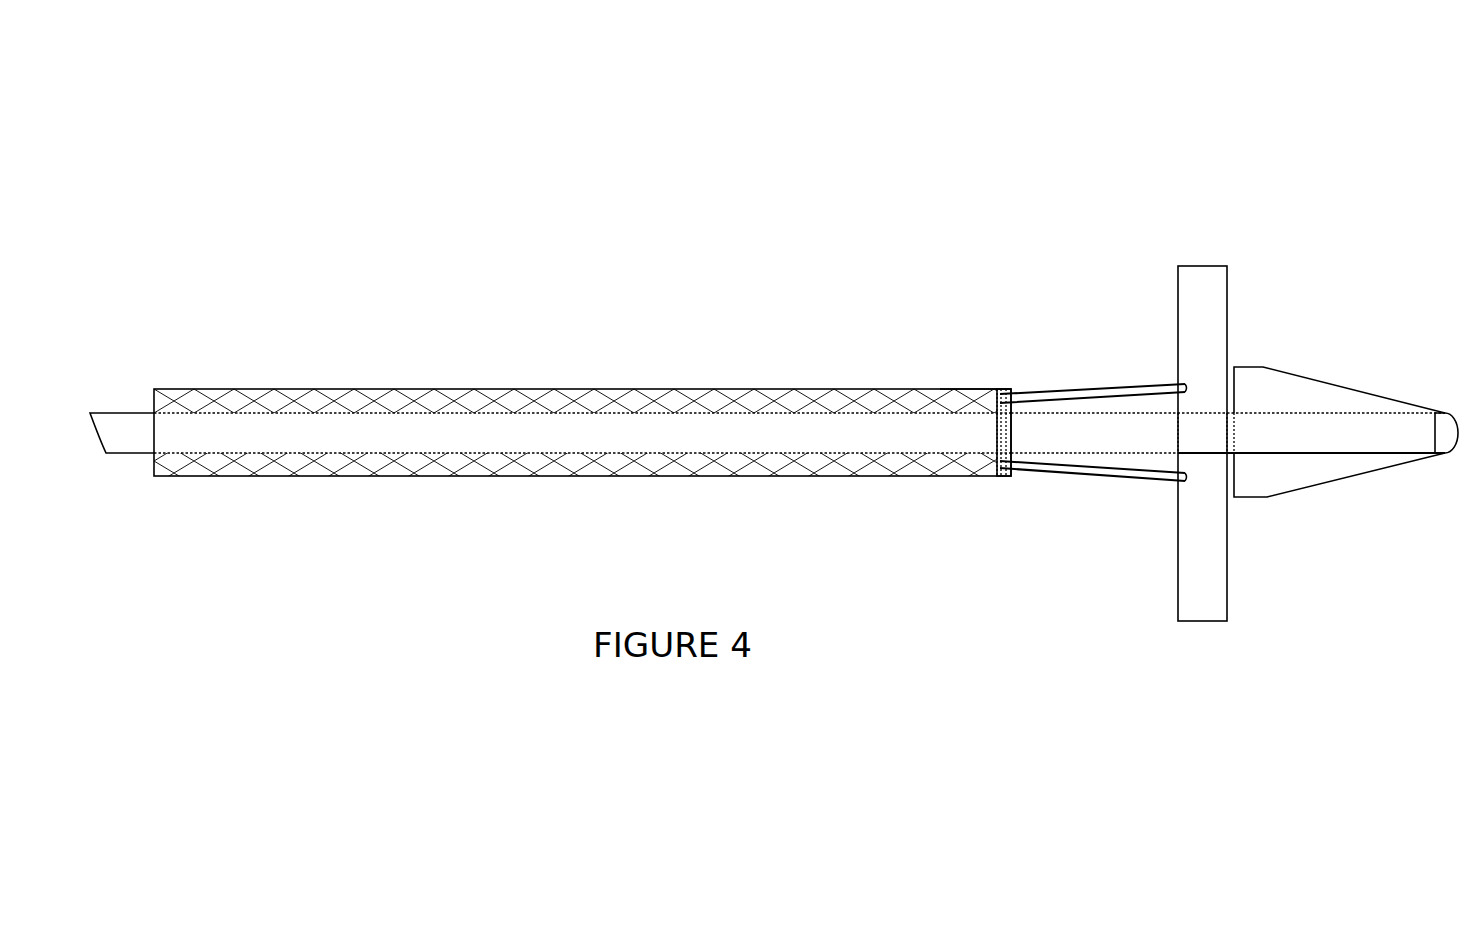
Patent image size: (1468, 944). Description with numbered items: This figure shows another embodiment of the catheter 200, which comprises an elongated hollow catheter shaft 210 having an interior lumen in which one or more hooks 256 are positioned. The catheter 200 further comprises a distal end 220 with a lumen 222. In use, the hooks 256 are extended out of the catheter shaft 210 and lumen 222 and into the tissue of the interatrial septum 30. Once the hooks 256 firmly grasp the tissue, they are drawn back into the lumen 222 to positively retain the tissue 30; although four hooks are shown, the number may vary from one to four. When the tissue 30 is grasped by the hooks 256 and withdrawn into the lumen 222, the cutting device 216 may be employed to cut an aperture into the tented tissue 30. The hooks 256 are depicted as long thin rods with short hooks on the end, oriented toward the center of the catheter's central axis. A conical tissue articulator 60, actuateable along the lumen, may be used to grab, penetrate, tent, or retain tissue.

The catheter 200 is at (556, 298).
The catheter shaft 210 is at (273, 395).
The cutting device 216 is at (993, 385).
The distal end 220 is at (1005, 492).
The lumen 222 is at (1000, 423).
The hooks 256 is at (1078, 382).
The interatrial septum 30 is at (1195, 278).
The tissue articulator 60 is at (1287, 380).